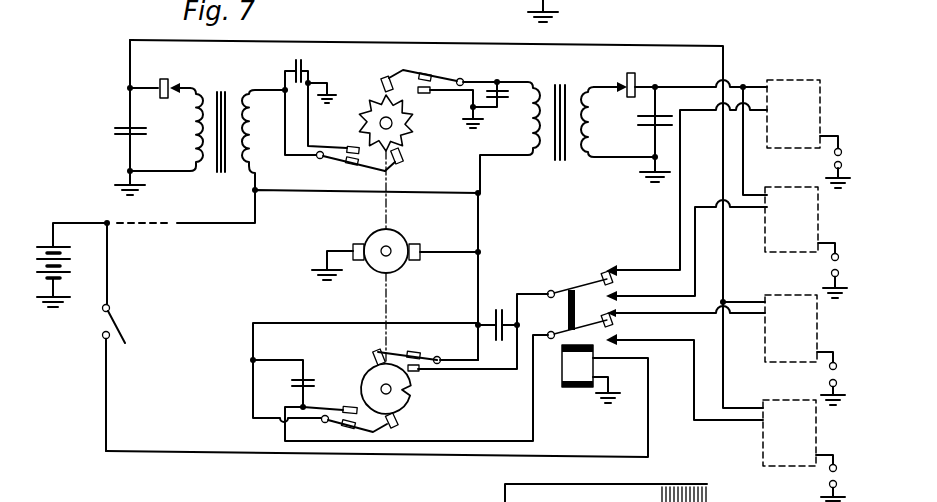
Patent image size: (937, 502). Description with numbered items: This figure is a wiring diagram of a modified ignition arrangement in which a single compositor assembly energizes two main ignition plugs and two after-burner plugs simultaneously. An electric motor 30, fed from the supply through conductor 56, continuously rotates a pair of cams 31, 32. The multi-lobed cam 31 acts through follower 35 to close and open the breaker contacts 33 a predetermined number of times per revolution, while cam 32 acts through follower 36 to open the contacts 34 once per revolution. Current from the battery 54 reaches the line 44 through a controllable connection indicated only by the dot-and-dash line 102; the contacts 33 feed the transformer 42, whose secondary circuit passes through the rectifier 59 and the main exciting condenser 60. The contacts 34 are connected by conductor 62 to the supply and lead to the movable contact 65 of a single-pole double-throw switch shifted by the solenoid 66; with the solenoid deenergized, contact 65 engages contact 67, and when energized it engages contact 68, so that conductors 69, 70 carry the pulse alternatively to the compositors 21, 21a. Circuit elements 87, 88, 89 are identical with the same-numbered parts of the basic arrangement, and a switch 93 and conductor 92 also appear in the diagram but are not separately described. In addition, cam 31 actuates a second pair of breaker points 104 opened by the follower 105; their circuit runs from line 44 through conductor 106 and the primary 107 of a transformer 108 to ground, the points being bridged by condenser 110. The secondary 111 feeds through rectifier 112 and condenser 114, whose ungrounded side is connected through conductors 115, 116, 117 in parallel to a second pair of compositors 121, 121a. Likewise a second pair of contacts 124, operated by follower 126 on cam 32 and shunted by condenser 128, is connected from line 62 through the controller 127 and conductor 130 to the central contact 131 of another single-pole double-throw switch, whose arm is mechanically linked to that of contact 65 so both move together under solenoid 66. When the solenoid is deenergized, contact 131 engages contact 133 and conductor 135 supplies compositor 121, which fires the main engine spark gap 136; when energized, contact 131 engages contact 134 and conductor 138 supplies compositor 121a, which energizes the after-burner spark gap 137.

The compositor 21 is at (808, 134).
The compositor 21a is at (806, 242).
The electric motor 30 is at (405, 236).
The cam 31 is at (403, 123).
The cam 32 is at (407, 402).
The breaker contacts 33 is at (427, 75).
The breaker contacts 34 is at (421, 358).
The cam follower 35 is at (383, 80).
The cam follower 36 is at (371, 356).
The transformer 42 is at (565, 76).
The conductor 44 is at (212, 225).
The battery 54 is at (70, 253).
The conductor 56 is at (480, 211).
The rectifier 59 is at (620, 83).
The main or exciting condenser 60 is at (660, 113).
The conductor 62 is at (478, 288).
The movable contact 65 is at (602, 278).
The solenoid 66 is at (562, 373).
The contact 67 is at (617, 270).
The contact 68 is at (613, 293).
The conductor 69 is at (680, 168).
The conductor 70 is at (733, 212).
The circuit element 87 is at (700, 85).
The circuit element 88 is at (750, 83).
The circuit element 89 is at (744, 168).
The conductor 92 is at (193, 438).
The switch 93 is at (107, 321).
The dot-and-dash line 102 is at (138, 230).
The breaker points 104 is at (342, 156).
The cam follower 105 is at (402, 157).
The conductor 106 is at (252, 190).
The primary 107 is at (247, 117).
The transformer 108 is at (225, 84).
The condenser 110 is at (298, 58).
The secondary 111 is at (193, 132).
The rectifier 112 is at (187, 68).
The condenser 114 is at (117, 121).
The conductor 115 is at (657, 47).
The conductor 116 is at (745, 295).
The conductor 117 is at (743, 400).
The compositor 121 is at (805, 350).
The compositor 121a is at (804, 450).
The contacts 124 is at (357, 418).
The cam follower 126 is at (398, 423).
The controller 127 is at (303, 310).
The condenser 128 is at (293, 382).
The conductor 130 is at (533, 430).
The central contact 131 is at (615, 325).
The contact 133 is at (602, 318).
The contact 134 is at (612, 339).
The conductor 135 is at (681, 316).
The main engine spark gap 136 is at (830, 369).
The after-burner spark gap 137 is at (827, 481).
The conductor 138 is at (710, 424).